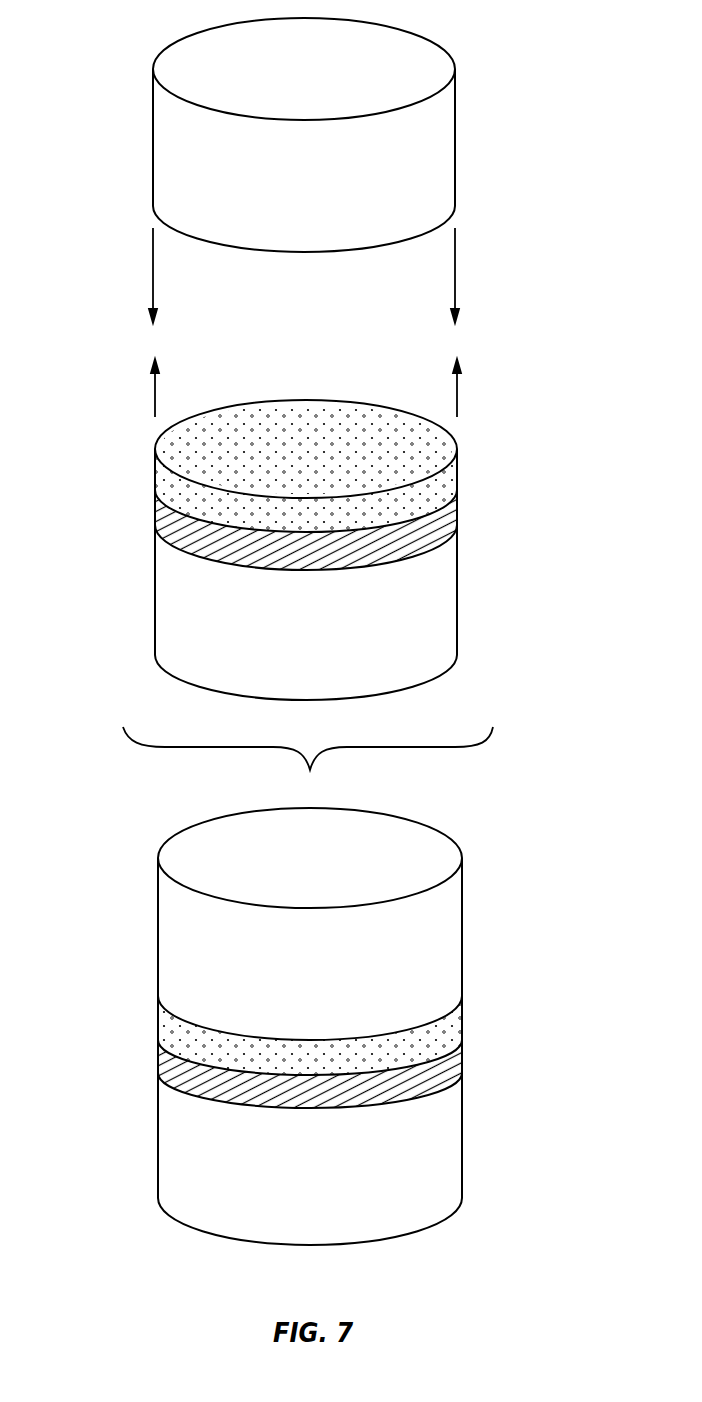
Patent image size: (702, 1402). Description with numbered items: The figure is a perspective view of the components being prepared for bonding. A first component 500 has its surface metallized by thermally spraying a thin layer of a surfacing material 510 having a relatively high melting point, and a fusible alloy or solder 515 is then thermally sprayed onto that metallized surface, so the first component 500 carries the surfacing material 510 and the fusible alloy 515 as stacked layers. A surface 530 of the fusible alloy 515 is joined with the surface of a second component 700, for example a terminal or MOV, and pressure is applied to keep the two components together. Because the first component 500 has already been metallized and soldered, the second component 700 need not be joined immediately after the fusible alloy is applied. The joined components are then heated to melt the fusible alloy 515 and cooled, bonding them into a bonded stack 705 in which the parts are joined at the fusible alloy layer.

The second component 700 is at (152, 143).
The bonded stack 705 is at (500, 848).
The surface of the fusible alloy 530 is at (167, 455).
The fusible alloy or solder 515 is at (458, 470).
The surfacing material 510 is at (458, 507).
The first component 500 is at (458, 600).